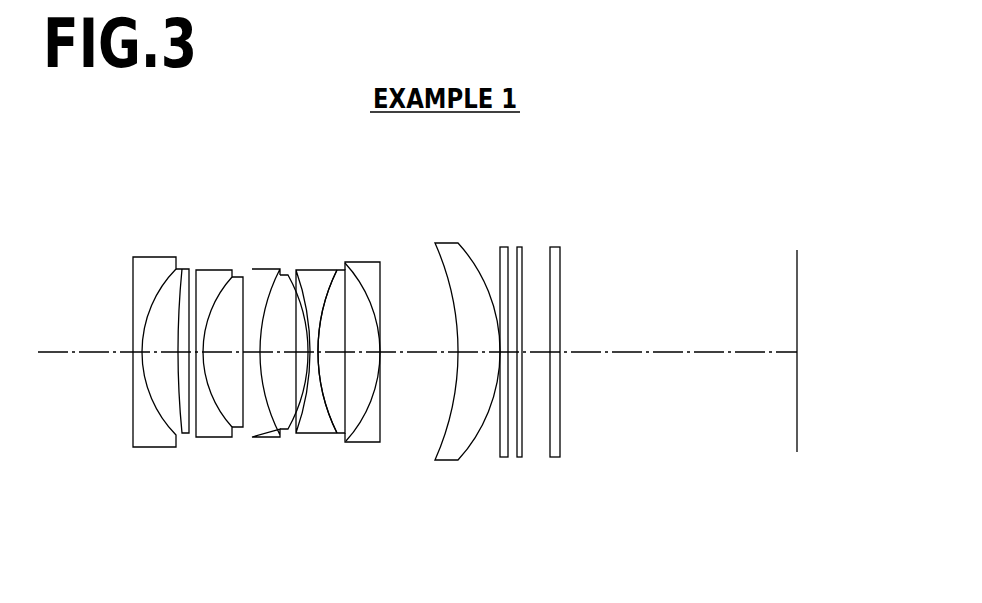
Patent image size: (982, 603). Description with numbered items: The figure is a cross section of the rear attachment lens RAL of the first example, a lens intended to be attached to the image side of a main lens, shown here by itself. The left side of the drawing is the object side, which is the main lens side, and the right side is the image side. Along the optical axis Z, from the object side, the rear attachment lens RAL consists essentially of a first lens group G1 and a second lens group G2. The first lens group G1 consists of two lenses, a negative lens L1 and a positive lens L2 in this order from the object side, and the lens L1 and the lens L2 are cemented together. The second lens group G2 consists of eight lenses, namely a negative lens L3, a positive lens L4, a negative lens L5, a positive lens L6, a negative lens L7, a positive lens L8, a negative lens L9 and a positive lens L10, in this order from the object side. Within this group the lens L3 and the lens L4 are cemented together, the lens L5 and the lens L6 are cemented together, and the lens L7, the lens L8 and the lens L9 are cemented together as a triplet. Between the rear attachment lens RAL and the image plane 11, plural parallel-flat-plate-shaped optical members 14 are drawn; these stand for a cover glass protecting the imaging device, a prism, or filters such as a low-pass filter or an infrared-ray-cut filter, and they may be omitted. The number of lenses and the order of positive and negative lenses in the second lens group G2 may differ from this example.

The negative lens L1 is at (148, 440).
The positive lens L2 is at (182, 433).
The negative lens L3 is at (213, 437).
The positive lens L4 is at (237, 428).
The negative lens L5 is at (260, 437).
The positive lens L6 is at (287, 429).
The negative lens L7 is at (313, 433).
The positive lens L8 is at (338, 433).
The negative lens L9 is at (362, 442).
The positive lens L10 is at (443, 460).
The first lens group G1 is at (190, 225).
The second lens group G2 is at (500, 225).
The rear attachment lens RAL is at (500, 184).
The optical axis Z is at (742, 350).
The image plane 11 is at (797, 428).
The parallel-flat-plate-shaped optical members 14 is at (560, 477).